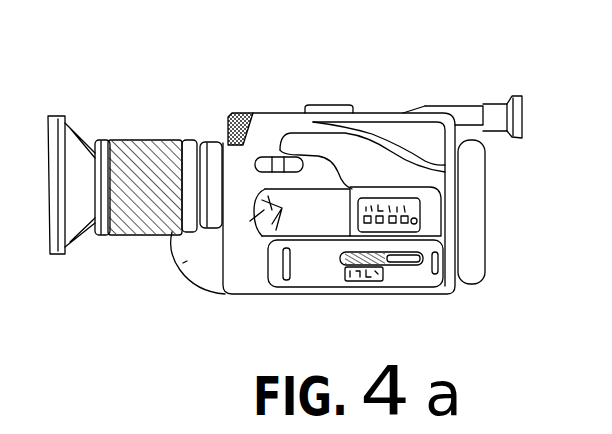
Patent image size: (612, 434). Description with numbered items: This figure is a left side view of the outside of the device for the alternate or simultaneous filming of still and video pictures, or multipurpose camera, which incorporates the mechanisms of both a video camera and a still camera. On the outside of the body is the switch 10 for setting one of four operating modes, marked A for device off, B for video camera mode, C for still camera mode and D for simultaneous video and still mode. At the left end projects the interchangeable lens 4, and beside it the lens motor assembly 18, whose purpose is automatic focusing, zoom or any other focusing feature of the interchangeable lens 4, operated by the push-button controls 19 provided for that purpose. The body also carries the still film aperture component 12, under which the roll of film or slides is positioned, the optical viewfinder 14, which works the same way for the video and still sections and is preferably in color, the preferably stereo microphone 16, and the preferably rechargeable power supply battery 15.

The interchangeable lens 4 is at (130, 143).
The switch 10 is at (222, 145).
The stereo microphone 16 is at (238, 116).
The optical viewfinder 14 is at (463, 107).
The push-button controls 19 is at (428, 214).
The power supply battery 15 is at (464, 256).
The still film aperture component 12 is at (310, 266).
The lens motor assembly 18 is at (185, 265).